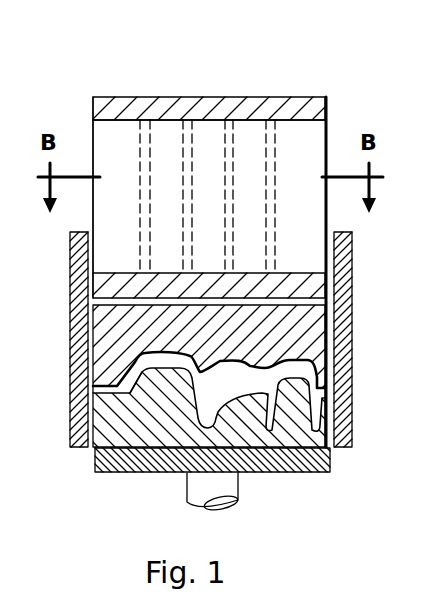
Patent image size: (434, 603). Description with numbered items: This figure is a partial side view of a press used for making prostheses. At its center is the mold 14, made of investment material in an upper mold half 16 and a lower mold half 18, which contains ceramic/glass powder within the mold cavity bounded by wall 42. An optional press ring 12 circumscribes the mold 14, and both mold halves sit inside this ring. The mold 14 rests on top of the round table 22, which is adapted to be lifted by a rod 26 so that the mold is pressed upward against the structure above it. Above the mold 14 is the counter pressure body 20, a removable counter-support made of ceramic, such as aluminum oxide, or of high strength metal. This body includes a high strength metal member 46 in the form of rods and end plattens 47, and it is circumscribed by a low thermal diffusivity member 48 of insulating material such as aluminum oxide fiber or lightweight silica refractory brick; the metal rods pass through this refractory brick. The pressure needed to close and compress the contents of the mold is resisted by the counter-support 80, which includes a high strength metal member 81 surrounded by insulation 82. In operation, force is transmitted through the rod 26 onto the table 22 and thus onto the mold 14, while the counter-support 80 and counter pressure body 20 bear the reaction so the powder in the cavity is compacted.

The press ring 12 is at (352, 290).
The mold 14 is at (115, 327).
The upper mold half 16 is at (307, 333).
The lower mold half 18 is at (313, 420).
The counter pressure body 20 is at (103, 108).
The round table 22 is at (330, 460).
The rod 26 is at (233, 483).
The mold cavity wall 42 is at (222, 408).
The high strength metal member 46 is at (222, 168).
The end plattens 47 is at (319, 110).
The low thermal diffusivity member 48 is at (113, 205).
The counter-support 80 is at (131, 97).
The high strength metal member 81 is at (277, 237).
The insulation 82 is at (329, 152).